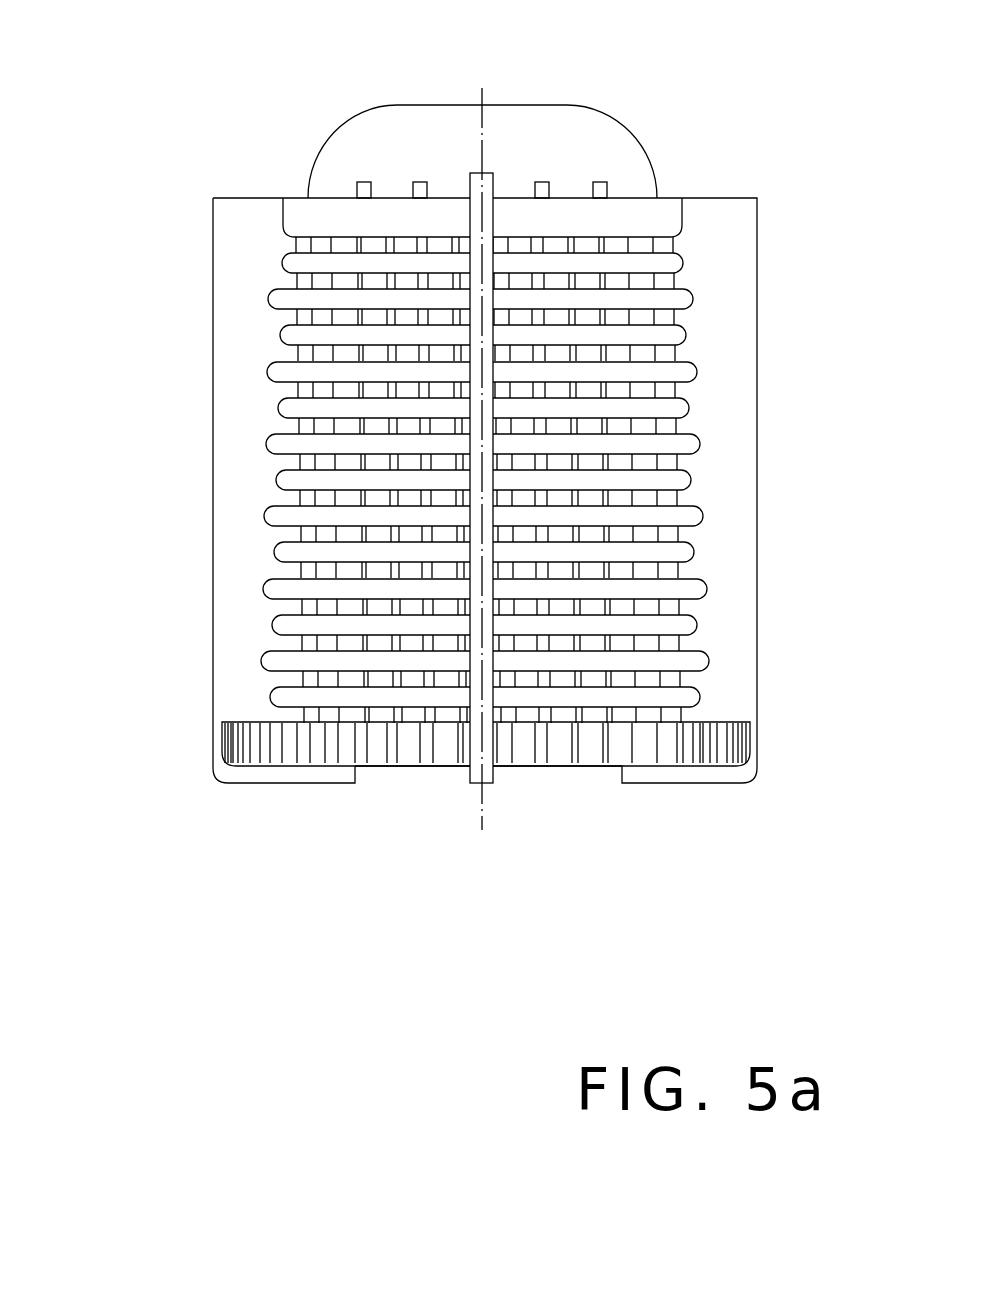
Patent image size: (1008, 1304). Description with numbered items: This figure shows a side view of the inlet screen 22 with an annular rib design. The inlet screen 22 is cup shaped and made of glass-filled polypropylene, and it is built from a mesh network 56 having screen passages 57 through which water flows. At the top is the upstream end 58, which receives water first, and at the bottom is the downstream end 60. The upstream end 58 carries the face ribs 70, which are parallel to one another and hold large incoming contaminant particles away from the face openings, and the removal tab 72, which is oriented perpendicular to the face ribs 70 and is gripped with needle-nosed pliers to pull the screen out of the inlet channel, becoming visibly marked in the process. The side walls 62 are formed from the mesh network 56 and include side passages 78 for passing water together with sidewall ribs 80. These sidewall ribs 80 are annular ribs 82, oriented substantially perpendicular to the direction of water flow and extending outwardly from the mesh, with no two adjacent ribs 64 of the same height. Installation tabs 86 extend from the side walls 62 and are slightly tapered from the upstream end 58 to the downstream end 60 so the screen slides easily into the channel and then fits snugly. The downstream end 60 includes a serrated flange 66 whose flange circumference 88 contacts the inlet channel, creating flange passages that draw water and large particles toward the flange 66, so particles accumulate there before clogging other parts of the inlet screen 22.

The inlet screen 22 is at (465, 456).
The mesh network 56 is at (353, 392).
The screen passages 57 is at (361, 480).
The upstream end 58 is at (536, 99).
The downstream end 60 is at (209, 817).
The side walls 62 is at (402, 555).
The ribs 64 is at (462, 216).
The serrated flange 66 is at (555, 807).
The face ribs 70 is at (360, 183).
The removal tab 72 is at (557, 135).
The side passages 78 is at (465, 321).
The sidewall ribs 80 is at (300, 268).
The annular ribs 82 is at (370, 252).
The installation tabs 86 is at (230, 617).
The flange circumference 88 is at (376, 752).